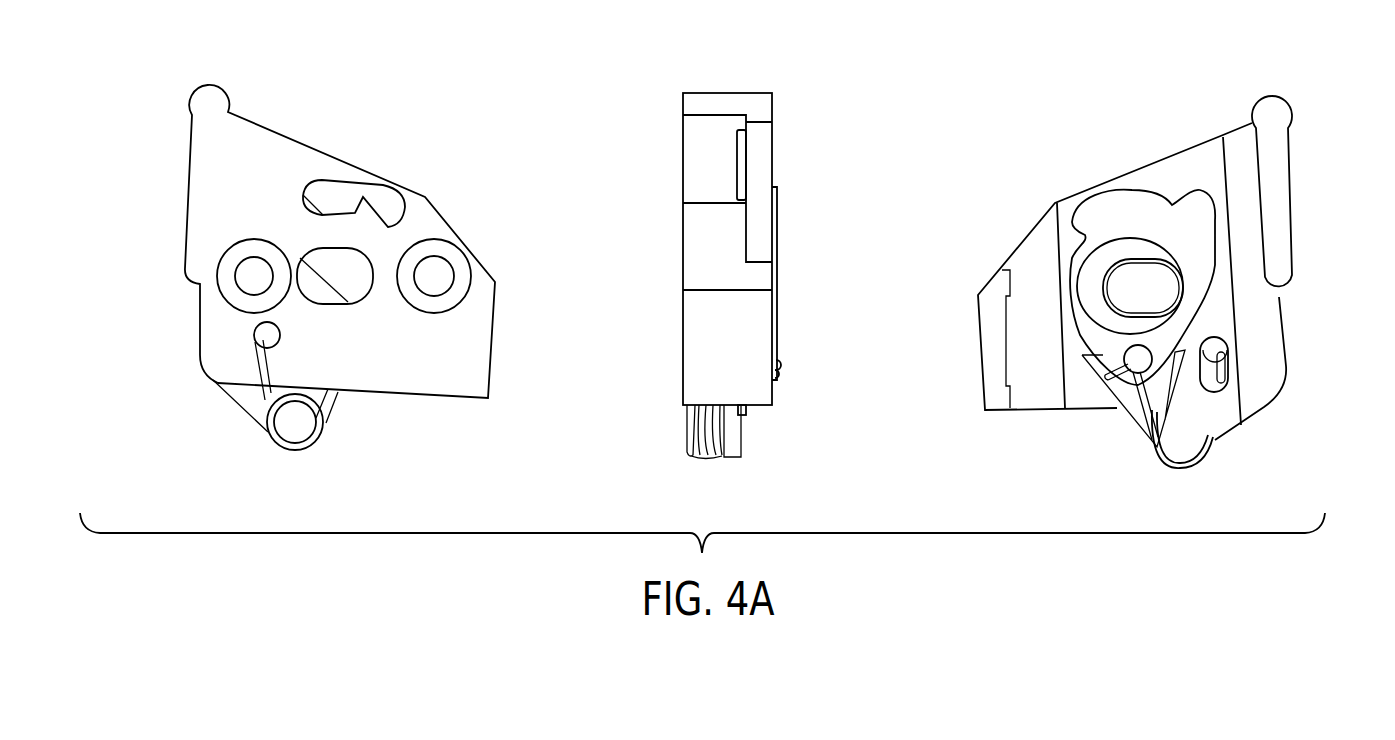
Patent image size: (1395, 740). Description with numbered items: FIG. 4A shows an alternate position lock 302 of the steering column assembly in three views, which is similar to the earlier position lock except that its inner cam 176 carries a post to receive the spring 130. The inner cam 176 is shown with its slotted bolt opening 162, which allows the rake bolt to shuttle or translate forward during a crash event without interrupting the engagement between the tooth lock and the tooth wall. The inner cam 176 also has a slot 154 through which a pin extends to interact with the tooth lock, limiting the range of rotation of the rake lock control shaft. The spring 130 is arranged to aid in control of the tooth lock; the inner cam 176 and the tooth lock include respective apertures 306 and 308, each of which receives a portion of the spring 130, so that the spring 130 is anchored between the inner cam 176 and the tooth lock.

The position lock 302 is at (736, 254).
The inner cam 176 is at (283, 130).
The slotted bolt opening 162 is at (300, 257).
The aperture 306 is at (250, 338).
The aperture 308 is at (1115, 340).
The slot 154 is at (1125, 198).
The spring 130 is at (1197, 473).